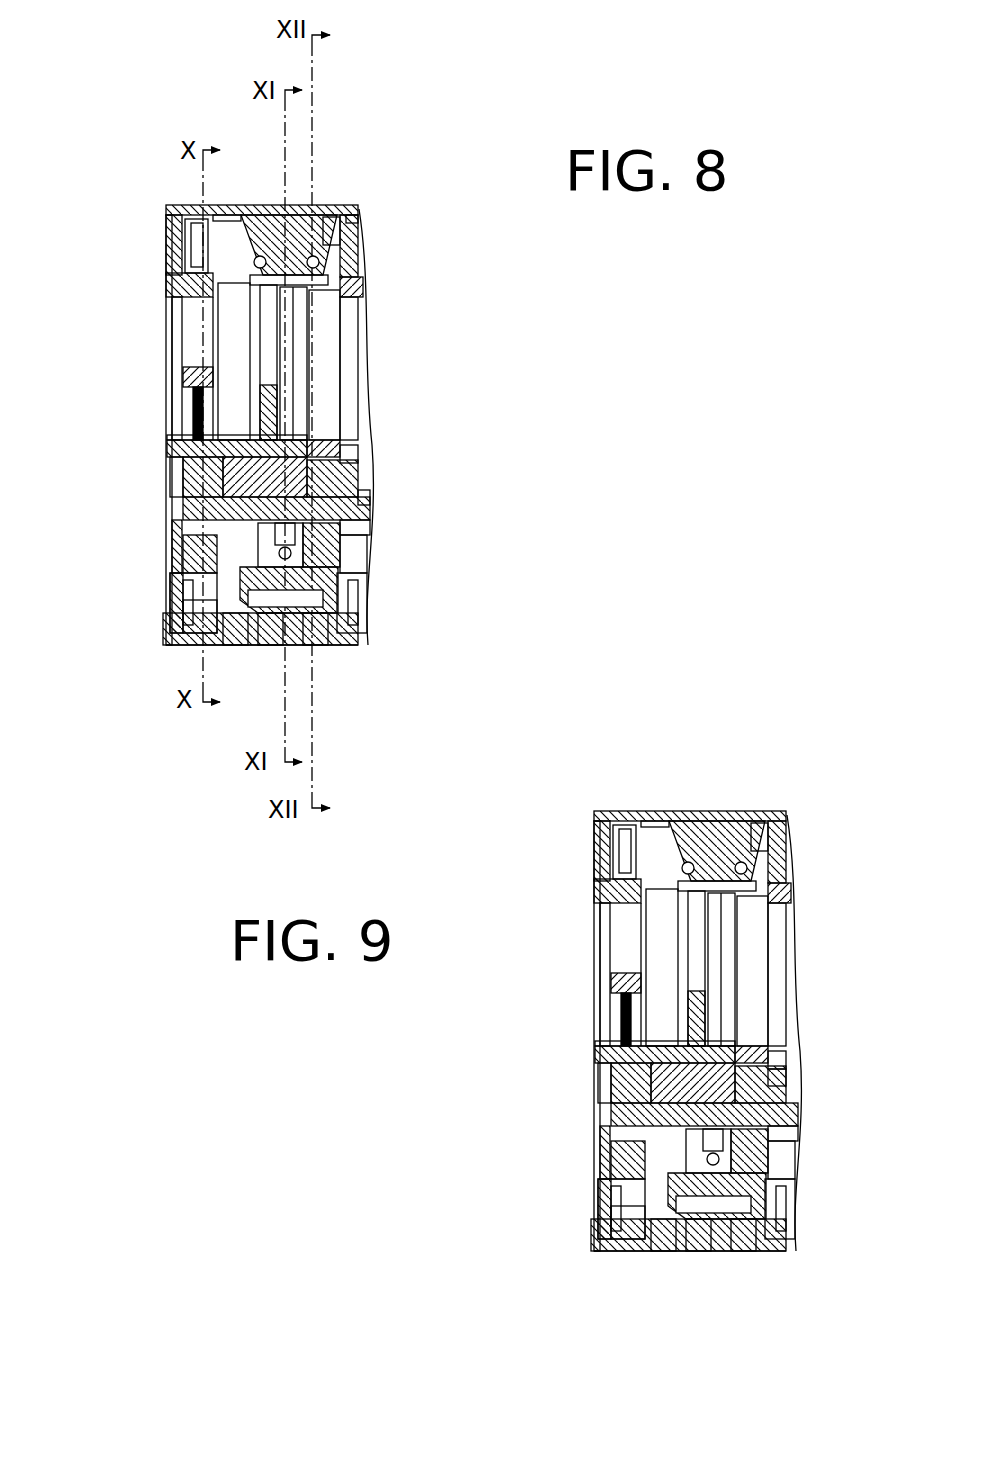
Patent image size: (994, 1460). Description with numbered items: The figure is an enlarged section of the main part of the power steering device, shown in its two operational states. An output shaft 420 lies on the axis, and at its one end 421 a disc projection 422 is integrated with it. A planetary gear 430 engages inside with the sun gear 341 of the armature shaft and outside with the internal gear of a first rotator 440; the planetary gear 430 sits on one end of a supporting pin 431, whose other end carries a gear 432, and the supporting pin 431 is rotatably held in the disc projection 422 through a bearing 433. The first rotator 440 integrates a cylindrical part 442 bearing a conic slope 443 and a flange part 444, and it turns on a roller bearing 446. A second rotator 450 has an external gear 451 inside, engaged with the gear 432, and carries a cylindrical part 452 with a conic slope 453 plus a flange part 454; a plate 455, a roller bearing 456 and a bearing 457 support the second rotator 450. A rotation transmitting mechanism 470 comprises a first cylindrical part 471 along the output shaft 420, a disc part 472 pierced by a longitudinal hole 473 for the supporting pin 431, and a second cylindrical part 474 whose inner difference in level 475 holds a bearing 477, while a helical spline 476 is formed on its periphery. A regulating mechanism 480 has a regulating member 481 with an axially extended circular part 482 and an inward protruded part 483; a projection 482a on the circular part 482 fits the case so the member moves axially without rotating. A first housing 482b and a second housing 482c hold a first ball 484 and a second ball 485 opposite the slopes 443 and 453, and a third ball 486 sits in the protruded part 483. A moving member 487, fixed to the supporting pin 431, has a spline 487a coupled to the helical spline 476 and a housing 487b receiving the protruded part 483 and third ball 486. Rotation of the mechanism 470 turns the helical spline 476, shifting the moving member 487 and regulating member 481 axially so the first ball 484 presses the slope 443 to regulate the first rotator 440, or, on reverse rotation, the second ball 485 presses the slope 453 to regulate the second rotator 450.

In FIG. 9, the sun gear 341 is at (821, 1076).
In FIG. 8, the output shaft 420 is at (139, 361).
In FIG. 9, the output shaft 420 is at (591, 967).
In FIG. 8, the one end of output shaft 421 is at (363, 371).
In FIG. 9, the one end of output shaft 421 is at (791, 977).
In FIG. 8, the disc projection 422 is at (421, 562).
In FIG. 9, the disc projection 422 is at (821, 1175).
In FIG. 8, the planetary gear 430 is at (421, 535).
In FIG. 9, the planetary gear 430 is at (821, 1151).
In FIG. 8, the supporting pin 431 is at (314, 514).
In FIG. 9, the supporting pin 431 is at (742, 1126).
In FIG. 8, the gear 432 is at (149, 556).
In FIG. 9, the gear 432 is at (575, 1160).
In FIG. 8, the bearing 433 is at (374, 519).
In FIG. 9, the bearing 433 is at (802, 1132).
In FIG. 8, the first rotator 440 is at (402, 412).
In FIG. 8, the cylindrical part 442 is at (393, 368).
In FIG. 9, the cylindrical part 442 is at (821, 1033).
In FIG. 8, the conic slope 443 is at (386, 180).
In FIG. 8, the flange part 444 is at (393, 246).
In FIG. 9, the flange part 444 is at (821, 842).
In FIG. 8, the roller bearing 446 is at (391, 603).
In FIG. 9, the roller bearing 446 is at (780, 1209).
In FIG. 8, the second rotator 450 is at (132, 430).
In FIG. 9, the second rotator 450 is at (557, 1036).
In FIG. 8, the external gear 451 is at (147, 395).
In FIG. 9, the external gear 451 is at (626, 1009).
In FIG. 8, the cylindrical part 452 is at (147, 305).
In FIG. 9, the cylindrical part 452 is at (573, 907).
In FIG. 8, the conic slope 453 is at (236, 165).
In FIG. 9, the conic slope 453 is at (634, 766).
In FIG. 8, the flange part 454 is at (234, 188).
In FIG. 9, the flange part 454 is at (679, 782).
In FIG. 8, the plate 455 is at (137, 602).
In FIG. 9, the plate 455 is at (563, 1207).
In FIG. 8, the roller bearing 456 is at (149, 614).
In FIG. 9, the roller bearing 456 is at (575, 1217).
In FIG. 8, the bearing 457 is at (152, 477).
In FIG. 9, the bearing 457 is at (631, 1083).
In FIG. 8, the rotation transmitting mechanism 470 is at (194, 443).
In FIG. 9, the rotation transmitting mechanism 470 is at (665, 1054).
In FIG. 8, the first cylindrical part 471 is at (194, 416).
In FIG. 9, the first cylindrical part 471 is at (620, 1026).
In FIG. 8, the disc part 472 is at (158, 651).
In FIG. 9, the disc part 472 is at (615, 1259).
In FIG. 8, the longitudinal hole 473 is at (105, 546).
In FIG. 9, the longitudinal hole 473 is at (557, 1152).
In FIG. 8, the second cylindrical part 474 is at (376, 430).
In FIG. 9, the second cylindrical part 474 is at (751, 1054).
In FIG. 8, the difference in level 475 is at (376, 416).
In FIG. 9, the difference in level 475 is at (804, 1030).
In FIG. 8, the helical spline 476 is at (194, 494).
In FIG. 9, the helical spline 476 is at (620, 1089).
In FIG. 8, the bearing 477 is at (105, 482).
In FIG. 9, the bearing 477 is at (558, 1077).
In FIG. 8, the regulating mechanism 480 is at (304, 641).
In FIG. 9, the regulating mechanism 480 is at (688, 1235).
In FIG. 8, the regulating member 481 is at (324, 635).
In FIG. 9, the regulating member 481 is at (748, 1243).
In FIG. 8, the circular part 482 is at (252, 675).
In FIG. 9, the circular part 482 is at (707, 1284).
In FIG. 8, the projection 482a is at (320, 189).
In FIG. 9, the projection 482a is at (714, 789).
In FIG. 8, the first housing 482b is at (400, 281).
In FIG. 9, the first housing 482b is at (828, 874).
In FIG. 8, the second housing 482c is at (145, 246).
In FIG. 9, the second housing 482c is at (624, 852).
In FIG. 8, the protruded part 483 is at (352, 546).
In FIG. 9, the protruded part 483 is at (708, 1151).
In FIG. 8, the first ball 484 is at (349, 203).
In FIG. 9, the first ball 484 is at (748, 797).
In FIG. 8, the second ball 485 is at (287, 223).
In FIG. 9, the second ball 485 is at (705, 817).
In FIG. 8, the third ball 486 is at (336, 675).
In FIG. 9, the third ball 486 is at (741, 1266).
In FIG. 8, the moving member 487 is at (430, 493).
In FIG. 8, the spline 487a is at (400, 451).
In FIG. 9, the spline 487a is at (828, 1048).
In FIG. 8, the housing 487b is at (238, 650).
In FIG. 9, the housing 487b is at (675, 1266).